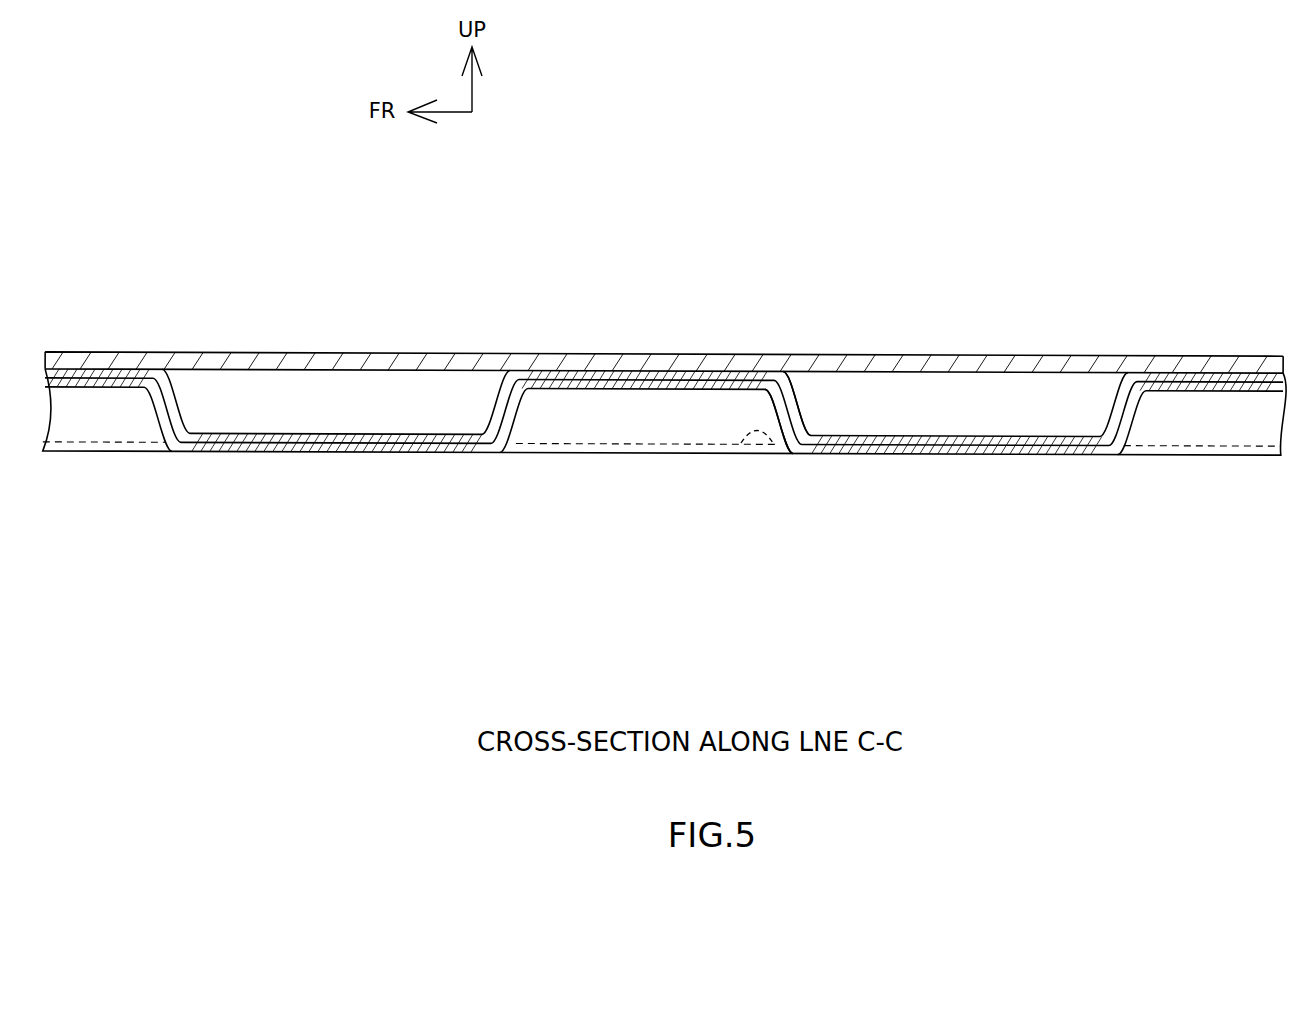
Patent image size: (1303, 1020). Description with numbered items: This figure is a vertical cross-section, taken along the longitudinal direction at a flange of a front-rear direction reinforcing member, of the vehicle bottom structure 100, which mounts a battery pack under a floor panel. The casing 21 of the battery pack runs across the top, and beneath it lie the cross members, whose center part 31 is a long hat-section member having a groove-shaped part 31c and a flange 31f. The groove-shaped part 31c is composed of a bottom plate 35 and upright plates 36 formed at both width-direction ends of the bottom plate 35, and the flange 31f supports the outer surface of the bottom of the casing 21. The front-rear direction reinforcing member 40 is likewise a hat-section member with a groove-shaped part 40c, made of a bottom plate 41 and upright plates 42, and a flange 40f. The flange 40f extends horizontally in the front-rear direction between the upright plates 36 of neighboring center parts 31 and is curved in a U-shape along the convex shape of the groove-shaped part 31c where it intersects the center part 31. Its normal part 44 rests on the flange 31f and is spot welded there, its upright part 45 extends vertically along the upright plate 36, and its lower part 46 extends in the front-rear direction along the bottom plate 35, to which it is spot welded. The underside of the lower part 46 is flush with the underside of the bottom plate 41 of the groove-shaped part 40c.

The vehicle bottom structure 100 is at (669, 389).
The casing 21 is at (1064, 356).
The center part 31 is at (664, 314).
The groove-shaped part 31c is at (664, 314).
The flange 31f is at (764, 372).
The bottom plate 35 is at (858, 433).
The upright plate 36 is at (808, 397).
The front-rear direction reinforcing member 40 is at (1210, 469).
The groove-shaped part 40c is at (1168, 424).
The flange 40f is at (1227, 392).
The bottom plate 41 is at (775, 450).
The upright plate 42 is at (570, 418).
The normal part 44 is at (641, 393).
The upright part 45 is at (778, 393).
The lower part 46 is at (1052, 456).